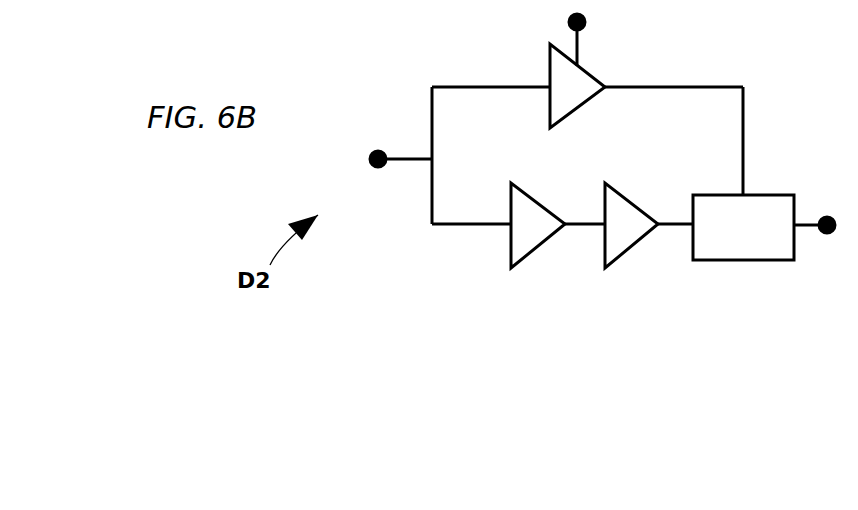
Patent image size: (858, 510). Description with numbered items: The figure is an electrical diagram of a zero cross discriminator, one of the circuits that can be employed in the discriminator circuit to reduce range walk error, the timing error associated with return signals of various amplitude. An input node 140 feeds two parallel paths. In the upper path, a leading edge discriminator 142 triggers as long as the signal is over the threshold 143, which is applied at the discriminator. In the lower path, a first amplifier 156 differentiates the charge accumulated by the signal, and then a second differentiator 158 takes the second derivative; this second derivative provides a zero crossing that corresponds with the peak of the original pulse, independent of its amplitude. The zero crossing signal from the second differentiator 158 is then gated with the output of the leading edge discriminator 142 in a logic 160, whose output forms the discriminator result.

The input node 140 is at (374, 152).
The leading edge discriminator 142 is at (590, 100).
The threshold 143 is at (585, 25).
The first amplifier 156 is at (533, 250).
The second differentiator 158 is at (638, 248).
The logic 160 is at (768, 195).